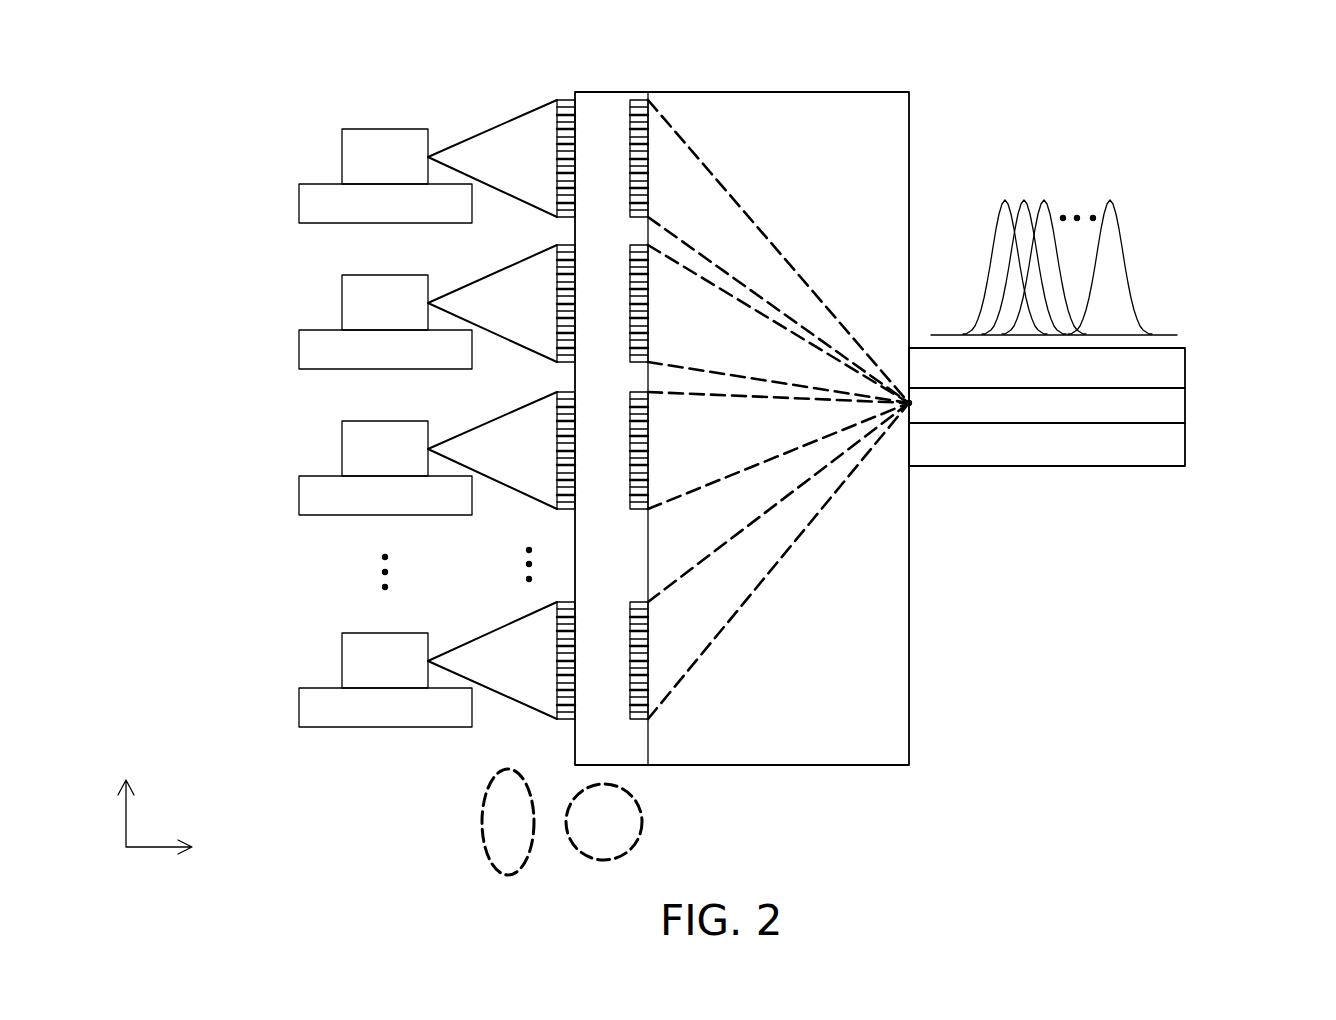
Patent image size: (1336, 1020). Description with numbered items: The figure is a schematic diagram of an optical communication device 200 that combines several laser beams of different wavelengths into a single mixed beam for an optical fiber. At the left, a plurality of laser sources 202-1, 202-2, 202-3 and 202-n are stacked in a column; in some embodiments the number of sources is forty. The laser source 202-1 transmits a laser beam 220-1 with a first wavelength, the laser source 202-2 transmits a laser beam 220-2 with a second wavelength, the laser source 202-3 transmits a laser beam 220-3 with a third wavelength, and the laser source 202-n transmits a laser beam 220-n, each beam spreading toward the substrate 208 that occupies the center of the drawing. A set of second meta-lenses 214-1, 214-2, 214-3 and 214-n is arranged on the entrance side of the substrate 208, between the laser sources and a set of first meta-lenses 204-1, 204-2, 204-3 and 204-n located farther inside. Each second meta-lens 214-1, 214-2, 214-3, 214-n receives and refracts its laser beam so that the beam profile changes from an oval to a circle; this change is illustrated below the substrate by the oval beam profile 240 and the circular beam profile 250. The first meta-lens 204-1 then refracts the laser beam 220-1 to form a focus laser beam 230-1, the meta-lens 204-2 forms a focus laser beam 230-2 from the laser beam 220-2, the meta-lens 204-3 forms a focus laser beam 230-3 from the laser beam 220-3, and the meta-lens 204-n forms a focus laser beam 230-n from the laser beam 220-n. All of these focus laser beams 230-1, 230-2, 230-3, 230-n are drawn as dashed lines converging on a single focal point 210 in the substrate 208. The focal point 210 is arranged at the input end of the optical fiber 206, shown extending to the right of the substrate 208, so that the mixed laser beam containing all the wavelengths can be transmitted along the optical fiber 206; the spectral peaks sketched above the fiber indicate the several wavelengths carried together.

The optical communication device 200 is at (183, 47).
The laser source 202-1 is at (342, 160).
The laser source 202-2 is at (342, 306).
The laser source 202-3 is at (342, 452).
The laser source 202-n is at (342, 664).
The first meta-lens 204-1 is at (643, 100).
The first meta-lens 204-2 is at (637, 245).
The first meta-lens 204-3 is at (640, 510).
The first meta-lens 204-n is at (640, 720).
The optical fiber 206 is at (1170, 370).
The substrate 208 is at (893, 116).
The focal point 210 is at (910, 405).
The second meta-lens 214-1 is at (563, 98).
The second meta-lens 214-2 is at (565, 364).
The second meta-lens 214-3 is at (565, 511).
The second meta-lens 214-n is at (565, 721).
The laser beam 220-1 is at (547, 169).
The laser beam 220-2 is at (547, 315).
The laser beam 220-3 is at (547, 462).
The laser beam 220-n is at (547, 674).
The focus laser beam 230-1 is at (718, 213).
The focus laser beam 230-2 is at (735, 339).
The focus laser beam 230-3 is at (735, 459).
The focus laser beam 230-n is at (718, 629).
The beam profile 240 is at (482, 822).
The beam profile 250 is at (641, 836).